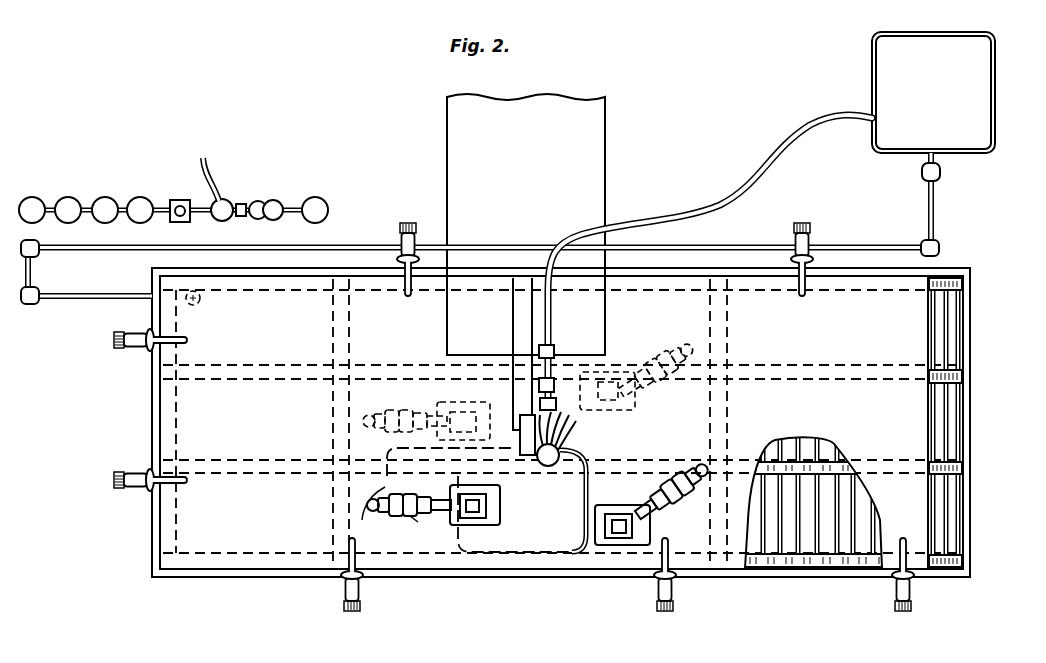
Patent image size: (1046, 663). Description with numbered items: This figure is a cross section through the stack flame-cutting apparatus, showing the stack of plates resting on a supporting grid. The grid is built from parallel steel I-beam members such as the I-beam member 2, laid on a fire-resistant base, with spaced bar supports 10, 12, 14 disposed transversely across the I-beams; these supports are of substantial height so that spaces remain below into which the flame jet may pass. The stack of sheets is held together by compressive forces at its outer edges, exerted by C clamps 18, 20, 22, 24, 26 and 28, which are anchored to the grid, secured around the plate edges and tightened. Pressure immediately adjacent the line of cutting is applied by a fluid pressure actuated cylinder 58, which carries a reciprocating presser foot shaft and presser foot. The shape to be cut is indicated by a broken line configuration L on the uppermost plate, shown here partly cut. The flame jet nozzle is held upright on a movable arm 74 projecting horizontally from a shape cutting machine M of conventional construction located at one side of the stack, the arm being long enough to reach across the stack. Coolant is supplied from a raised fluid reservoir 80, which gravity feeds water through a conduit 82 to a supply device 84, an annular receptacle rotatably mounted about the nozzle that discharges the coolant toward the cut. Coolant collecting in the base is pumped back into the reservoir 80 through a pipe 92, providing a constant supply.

The steel I-beam member 2 is at (972, 422).
The bar support 10 is at (941, 488).
The bar support 12 is at (957, 498).
The bar support 14 is at (962, 512).
The C clamp 18 is at (362, 598).
The C clamp 20 is at (135, 482).
The C clamp 22 is at (398, 266).
The C clamp 24 is at (661, 591).
The C clamp 26 is at (810, 233).
The C clamp 28 is at (900, 593).
The fluid pressure actuated cylinder 58 is at (673, 517).
The movable arm 74 is at (522, 458).
The fluid reservoir 80 is at (997, 118).
The conduit 82 is at (730, 203).
The supply device 84 is at (565, 452).
The pipe 92 is at (864, 245).
The shape cutting machine M is at (605, 168).
The broken line configuration L is at (426, 510).